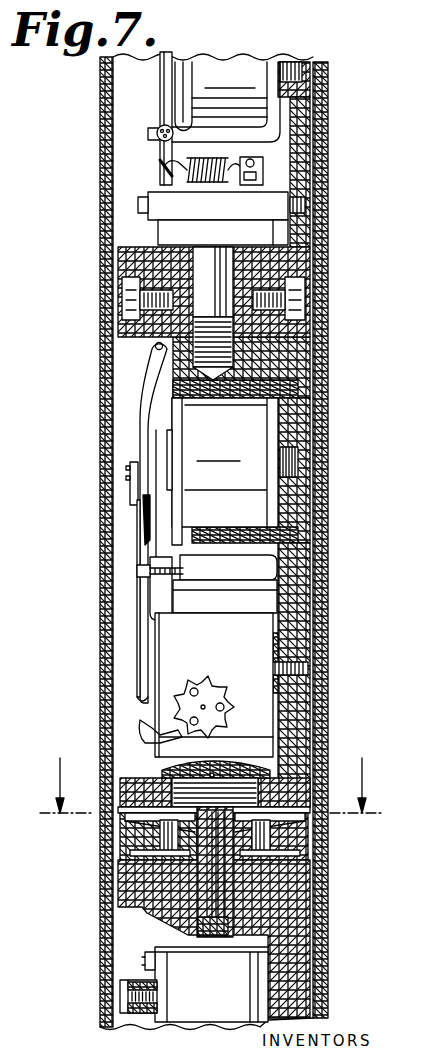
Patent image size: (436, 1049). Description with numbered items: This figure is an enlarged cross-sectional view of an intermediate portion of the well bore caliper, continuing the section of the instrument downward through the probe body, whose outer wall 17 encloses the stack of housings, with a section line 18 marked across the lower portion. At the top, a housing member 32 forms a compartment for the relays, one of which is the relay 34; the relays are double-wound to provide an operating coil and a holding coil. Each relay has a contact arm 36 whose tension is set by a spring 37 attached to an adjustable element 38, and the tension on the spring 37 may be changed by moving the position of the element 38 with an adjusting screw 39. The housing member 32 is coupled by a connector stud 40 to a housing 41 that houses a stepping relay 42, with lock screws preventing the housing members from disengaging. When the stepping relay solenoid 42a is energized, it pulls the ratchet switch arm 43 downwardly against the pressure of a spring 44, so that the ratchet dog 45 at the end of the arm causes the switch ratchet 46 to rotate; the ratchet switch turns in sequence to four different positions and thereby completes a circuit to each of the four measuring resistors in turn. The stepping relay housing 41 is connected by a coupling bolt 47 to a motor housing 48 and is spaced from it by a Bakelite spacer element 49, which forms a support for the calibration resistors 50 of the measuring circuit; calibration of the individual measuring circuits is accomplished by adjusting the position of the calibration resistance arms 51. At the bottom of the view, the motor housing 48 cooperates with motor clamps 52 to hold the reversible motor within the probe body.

The housing wall 17 is at (107, 88).
The section line 18- 18 is at (211, 771).
The housing member 32 is at (290, 257).
The relay 34 is at (243, 70).
The contact arm 36 is at (160, 90).
The spring 37 is at (185, 162).
The adjustable element 38 is at (258, 188).
The adjusting screw 39 is at (145, 210).
The connector stud 40 is at (205, 263).
The housing 41 is at (295, 363).
The stepping relay 42 is at (132, 655).
The stepping relay solenoid 42a is at (225, 471).
The ratchet switch arm 43 is at (137, 592).
The spring 44 is at (207, 587).
The ratchet dog 45 is at (157, 752).
The switch ratchet 46 is at (212, 692).
The coupling bolt 47 is at (260, 766).
The motor housing 48 is at (293, 900).
The Bakelite spacer element 49 is at (307, 832).
The calibration resistor 50 is at (137, 857).
The calibration resistance arm 51 is at (120, 822).
The motor clamp 52 is at (130, 1012).